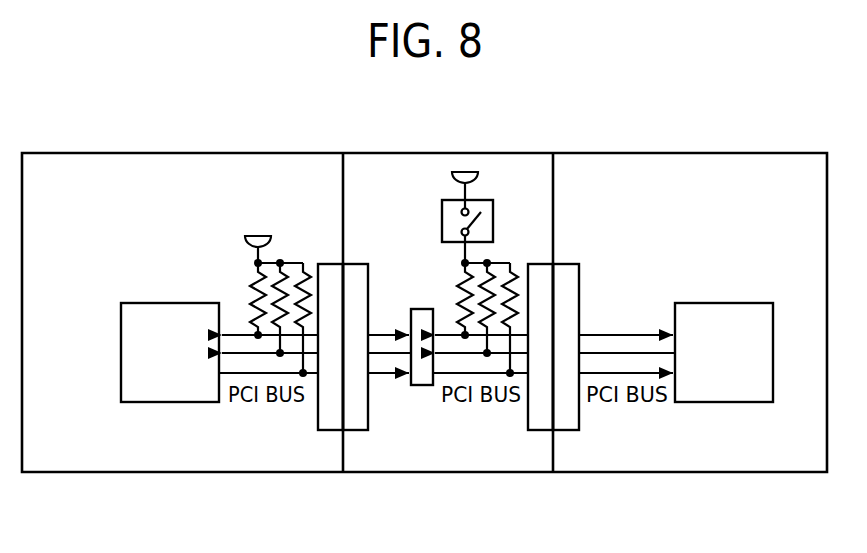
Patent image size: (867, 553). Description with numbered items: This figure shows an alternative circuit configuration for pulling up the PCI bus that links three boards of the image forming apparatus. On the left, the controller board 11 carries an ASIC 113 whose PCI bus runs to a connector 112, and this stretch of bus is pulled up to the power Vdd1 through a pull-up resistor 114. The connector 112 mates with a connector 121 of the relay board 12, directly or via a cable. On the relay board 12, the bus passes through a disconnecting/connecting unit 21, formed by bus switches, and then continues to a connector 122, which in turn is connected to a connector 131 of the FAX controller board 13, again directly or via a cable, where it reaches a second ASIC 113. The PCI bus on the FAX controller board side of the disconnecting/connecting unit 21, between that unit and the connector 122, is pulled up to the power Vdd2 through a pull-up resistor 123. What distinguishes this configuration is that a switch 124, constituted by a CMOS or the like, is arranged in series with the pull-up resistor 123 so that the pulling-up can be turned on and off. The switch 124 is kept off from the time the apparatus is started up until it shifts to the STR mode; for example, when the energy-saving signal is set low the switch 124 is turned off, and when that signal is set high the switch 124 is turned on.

The controller board 11 is at (163, 473).
The relay board 12 is at (442, 473).
The FAX controller board 13 is at (700, 473).
The disconnecting/connecting unit 21 is at (421, 309).
The connector 112 is at (328, 431).
The ASIC 113 is at (152, 303).
The pull-up resistor 114 is at (241, 277).
The connector 121 is at (355, 431).
The connector 122 is at (540, 431).
The pull-up resistor 123 is at (451, 277).
The switch 124 is at (494, 221).
The connector 131 is at (565, 431).